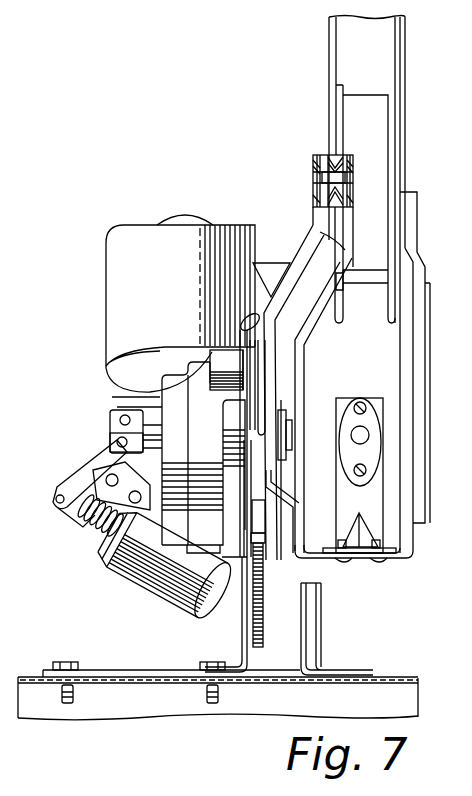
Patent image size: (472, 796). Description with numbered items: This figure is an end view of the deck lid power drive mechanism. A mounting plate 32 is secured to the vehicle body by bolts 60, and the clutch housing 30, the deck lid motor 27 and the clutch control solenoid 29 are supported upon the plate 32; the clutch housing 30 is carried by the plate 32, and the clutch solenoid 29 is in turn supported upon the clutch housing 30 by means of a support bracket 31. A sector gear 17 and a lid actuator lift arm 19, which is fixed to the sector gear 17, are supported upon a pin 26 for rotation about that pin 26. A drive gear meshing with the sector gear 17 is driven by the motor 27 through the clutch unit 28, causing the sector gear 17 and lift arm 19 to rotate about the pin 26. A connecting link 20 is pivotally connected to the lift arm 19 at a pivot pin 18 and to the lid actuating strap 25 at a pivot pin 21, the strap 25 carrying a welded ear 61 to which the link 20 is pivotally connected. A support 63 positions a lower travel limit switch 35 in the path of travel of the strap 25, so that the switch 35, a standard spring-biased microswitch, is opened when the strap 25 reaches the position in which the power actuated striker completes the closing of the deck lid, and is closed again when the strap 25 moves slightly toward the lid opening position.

The sector gear 17 is at (263, 596).
The pivot pin 18 is at (286, 433).
The lid actuator lift arm 19 is at (271, 478).
The connecting link 20 is at (338, 240).
The pivot pin 21 is at (316, 176).
The deck lid actuating strap 25 is at (399, 43).
The support shaft (pin) 26 is at (301, 560).
The motor 27 is at (133, 237).
The clutch unit 28 is at (193, 493).
The clutch actuator solenoid 29 is at (213, 600).
The clutch housing 30 is at (160, 395).
The support bracket 31 is at (103, 482).
The mounting plate (bracket plate) 32 is at (247, 655).
The lower travel limit switch 35 is at (364, 430).
The bolts 60 is at (222, 700).
The ear 61 is at (379, 115).
The support 63 is at (308, 625).